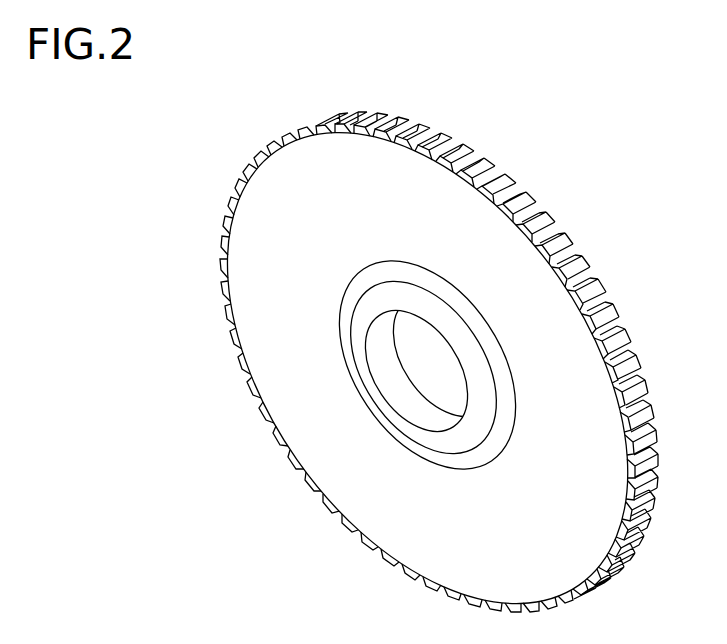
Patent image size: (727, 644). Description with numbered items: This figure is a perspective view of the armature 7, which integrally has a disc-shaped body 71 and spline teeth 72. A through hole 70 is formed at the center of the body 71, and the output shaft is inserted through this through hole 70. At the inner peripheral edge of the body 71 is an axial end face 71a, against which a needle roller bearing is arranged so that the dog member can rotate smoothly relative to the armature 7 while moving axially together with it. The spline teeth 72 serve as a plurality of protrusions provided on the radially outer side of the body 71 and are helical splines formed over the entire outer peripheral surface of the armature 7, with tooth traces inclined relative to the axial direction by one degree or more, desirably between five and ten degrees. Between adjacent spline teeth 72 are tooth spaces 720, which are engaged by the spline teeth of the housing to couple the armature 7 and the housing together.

The armature 7 is at (558, 157).
The through hole 70 is at (395, 380).
The body 71 is at (252, 304).
The axial end face 71a is at (360, 372).
The spline teeth 72 is at (608, 288).
The tooth spaces 720 is at (586, 255).